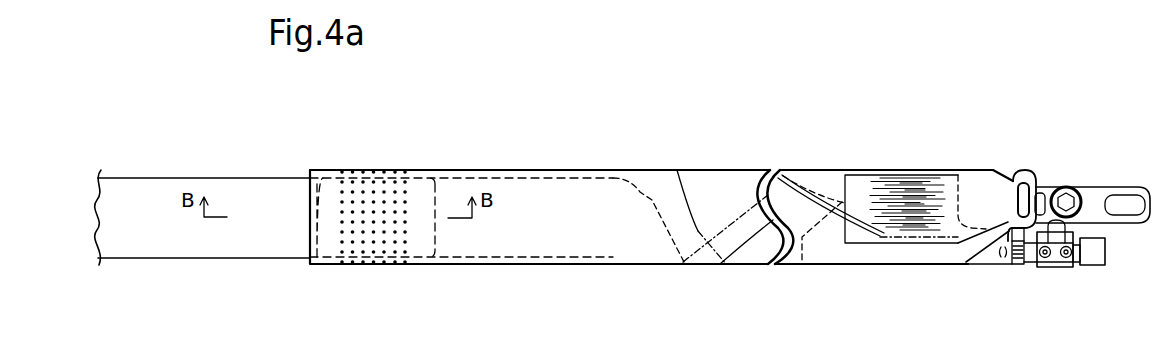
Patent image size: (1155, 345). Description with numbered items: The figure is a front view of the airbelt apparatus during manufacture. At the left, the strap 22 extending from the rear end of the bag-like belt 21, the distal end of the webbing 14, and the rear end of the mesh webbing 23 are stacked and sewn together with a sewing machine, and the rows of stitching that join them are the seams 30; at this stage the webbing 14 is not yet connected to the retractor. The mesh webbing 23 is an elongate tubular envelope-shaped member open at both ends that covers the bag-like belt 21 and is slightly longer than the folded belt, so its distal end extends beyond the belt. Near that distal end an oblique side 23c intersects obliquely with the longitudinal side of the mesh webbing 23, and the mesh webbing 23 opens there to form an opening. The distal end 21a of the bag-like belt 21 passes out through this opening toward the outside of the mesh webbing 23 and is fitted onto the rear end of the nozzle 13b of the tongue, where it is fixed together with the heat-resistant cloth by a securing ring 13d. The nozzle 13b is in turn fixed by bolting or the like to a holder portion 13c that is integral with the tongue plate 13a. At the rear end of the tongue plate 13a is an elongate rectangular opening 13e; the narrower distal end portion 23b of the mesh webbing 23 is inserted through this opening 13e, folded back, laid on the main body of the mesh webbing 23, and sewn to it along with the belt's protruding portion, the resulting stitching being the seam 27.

The webbing 14 is at (211, 178).
The seams 30 is at (363, 170).
The mesh webbing 23 is at (481, 170).
The strap 22 is at (544, 178).
The bag-like belt 21 is at (640, 192).
The distal end portion of the mesh webbing 23b is at (868, 181).
The seam 27 is at (920, 178).
The oblique side 23c is at (970, 264).
The distal end of the bag-like belt 21a is at (982, 266).
The opening 13e is at (1027, 172).
The tongue plate 13a is at (1095, 187).
The nozzle 13b is at (1092, 267).
The holder portion 13c is at (1052, 268).
The securing ring 13d is at (1019, 266).